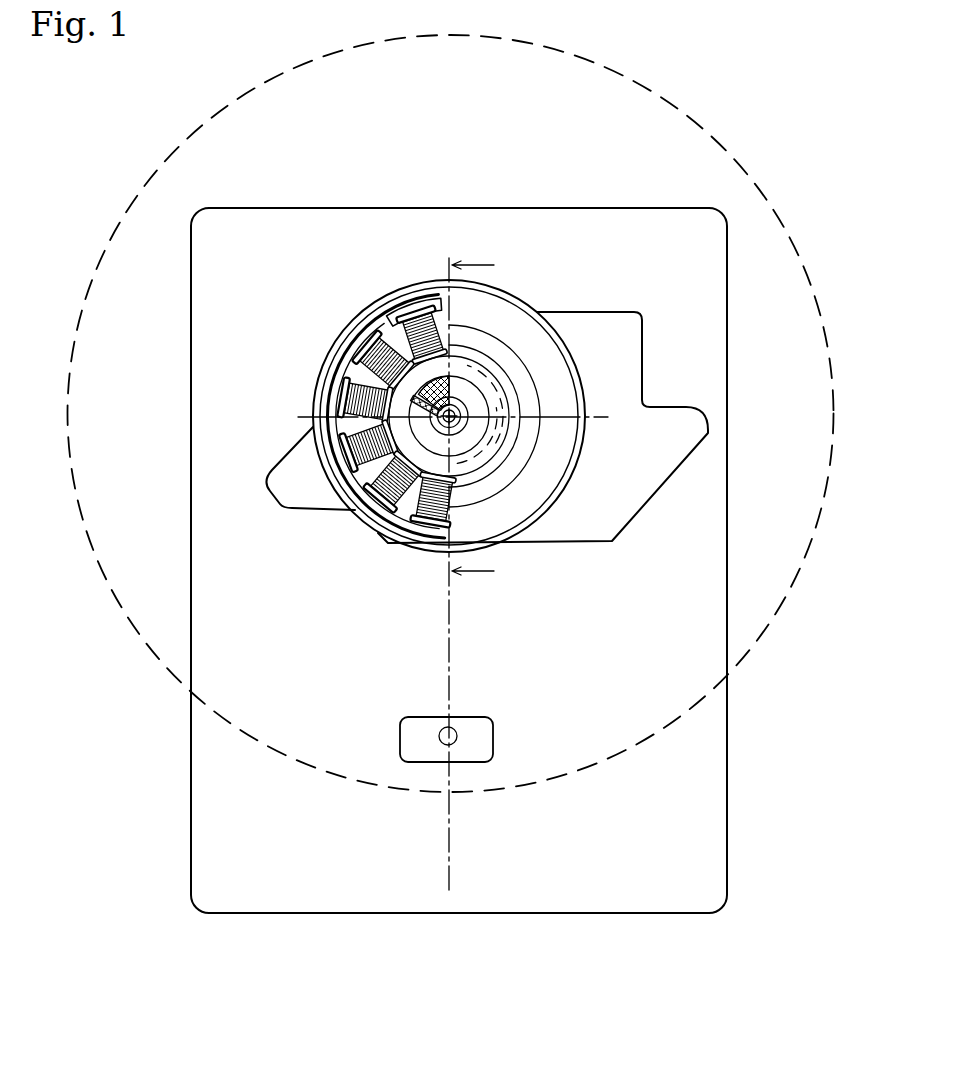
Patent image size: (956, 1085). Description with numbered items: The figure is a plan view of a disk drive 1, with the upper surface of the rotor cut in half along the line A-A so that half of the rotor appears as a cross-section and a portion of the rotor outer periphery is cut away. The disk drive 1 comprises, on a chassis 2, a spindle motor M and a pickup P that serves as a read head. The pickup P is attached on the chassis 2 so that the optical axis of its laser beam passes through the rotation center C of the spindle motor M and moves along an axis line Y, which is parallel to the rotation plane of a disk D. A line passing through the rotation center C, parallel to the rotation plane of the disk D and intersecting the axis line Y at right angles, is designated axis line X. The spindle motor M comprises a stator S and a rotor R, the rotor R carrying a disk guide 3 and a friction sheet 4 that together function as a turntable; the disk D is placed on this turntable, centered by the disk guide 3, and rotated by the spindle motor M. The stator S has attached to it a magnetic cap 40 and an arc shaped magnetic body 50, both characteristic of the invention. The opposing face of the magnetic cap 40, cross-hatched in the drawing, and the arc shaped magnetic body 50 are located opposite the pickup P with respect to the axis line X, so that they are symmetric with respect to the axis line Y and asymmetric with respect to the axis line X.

The disk drive 1 is at (652, 182).
The chassis 2 is at (727, 780).
The disk guide 3 is at (493, 336).
The friction sheet 4 is at (565, 437).
The magnetic cap 40 is at (437, 398).
The arc shaped magnetic body 50 is at (427, 297).
The spindle motor M is at (380, 375).
The stator S is at (323, 510).
The rotor R is at (380, 471).
The rotation center C is at (450, 413).
The disk D is at (145, 648).
The pickup P is at (493, 738).
The axis line X is at (429, 417).
The axis line Y is at (427, 576).
The line A- A is at (488, 416).